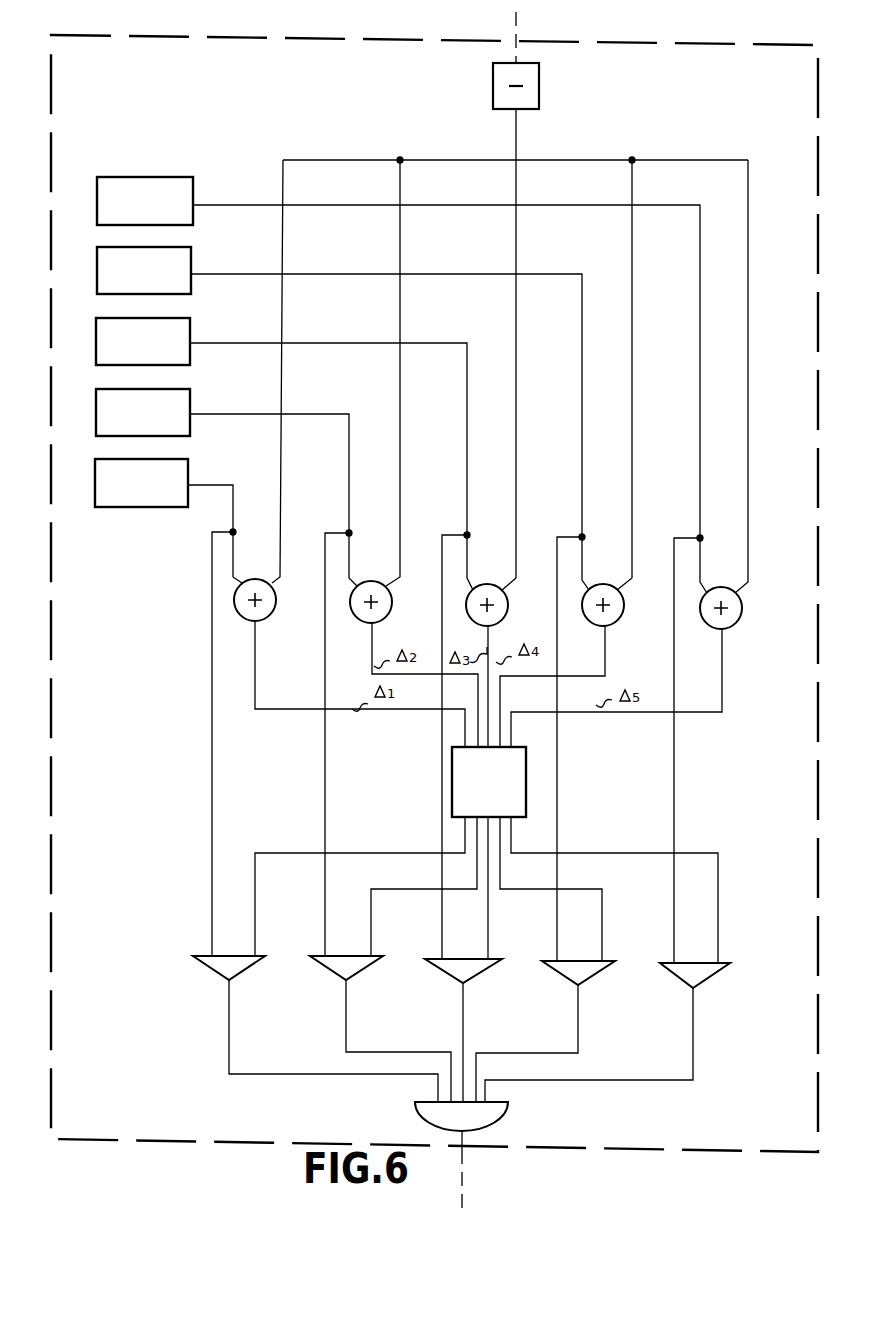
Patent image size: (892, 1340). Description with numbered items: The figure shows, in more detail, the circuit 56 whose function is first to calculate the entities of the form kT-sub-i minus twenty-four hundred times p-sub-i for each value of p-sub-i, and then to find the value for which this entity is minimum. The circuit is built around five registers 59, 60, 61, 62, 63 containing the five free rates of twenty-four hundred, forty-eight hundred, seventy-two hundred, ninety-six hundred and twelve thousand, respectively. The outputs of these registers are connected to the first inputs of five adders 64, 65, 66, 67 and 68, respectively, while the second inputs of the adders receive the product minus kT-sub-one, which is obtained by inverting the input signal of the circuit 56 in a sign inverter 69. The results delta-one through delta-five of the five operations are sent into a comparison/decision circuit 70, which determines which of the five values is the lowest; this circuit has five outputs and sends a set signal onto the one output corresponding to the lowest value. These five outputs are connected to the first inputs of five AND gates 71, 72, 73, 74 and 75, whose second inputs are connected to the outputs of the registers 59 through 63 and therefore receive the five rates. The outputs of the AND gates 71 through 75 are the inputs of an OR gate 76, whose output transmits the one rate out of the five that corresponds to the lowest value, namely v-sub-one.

The circuit 56 is at (753, 45).
The register 59 is at (97, 487).
The register 60 is at (97, 416).
The register 61 is at (97, 345).
The register 62 is at (97, 275).
The register 63 is at (97, 205).
The adder 64 is at (268, 616).
The adder 65 is at (365, 622).
The adder 66 is at (505, 618).
The adder 67 is at (620, 620).
The adder 68 is at (735, 624).
The sign inverter 69 is at (540, 87).
The comparison/decision circuit 70 is at (529, 791).
The AND gate 71 is at (246, 969).
The AND gate 72 is at (362, 971).
The AND gate 73 is at (482, 972).
The AND gate 74 is at (595, 974).
The AND gate 75 is at (710, 977).
The OR gate 76 is at (489, 1127).